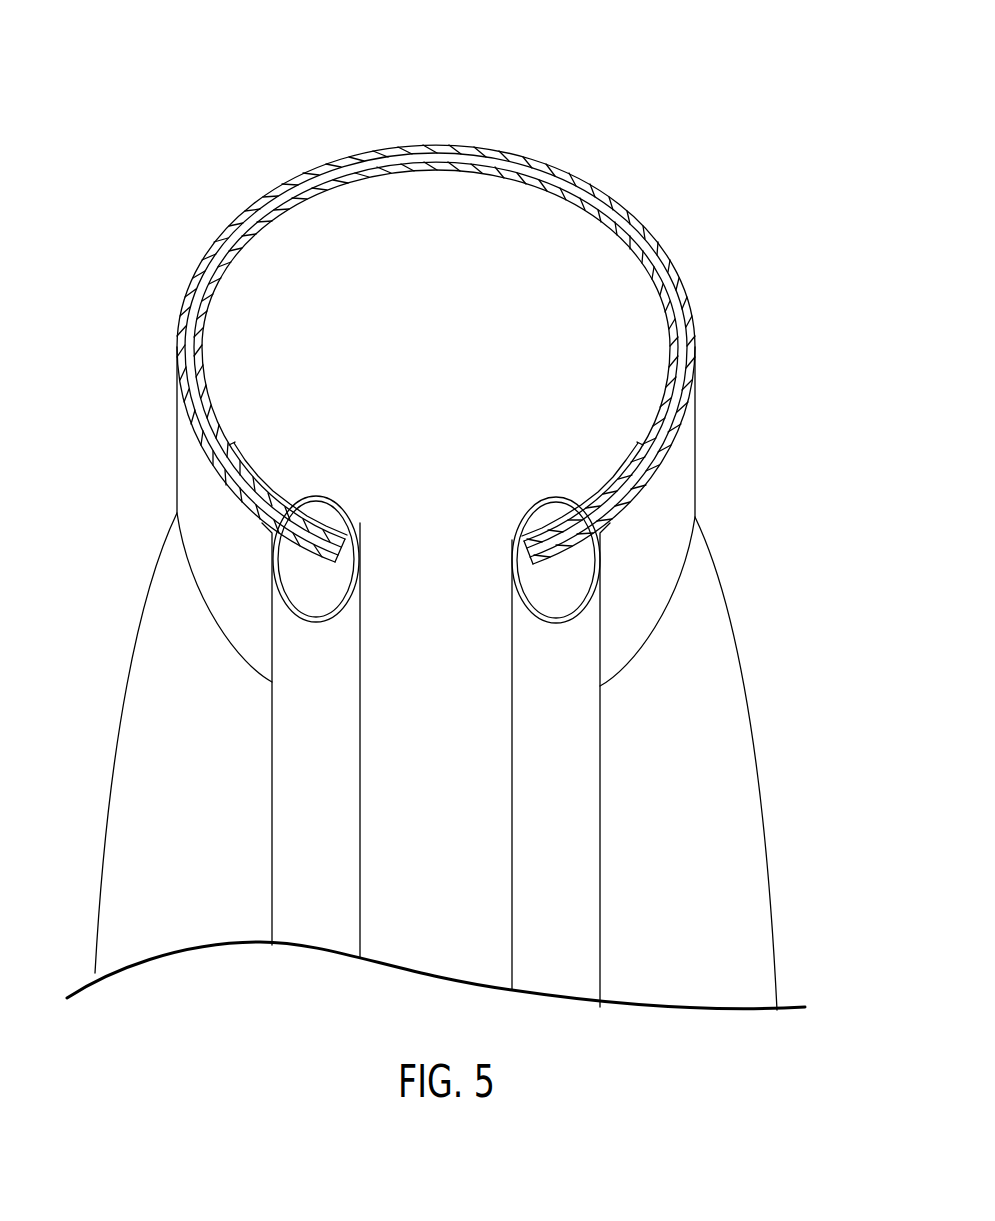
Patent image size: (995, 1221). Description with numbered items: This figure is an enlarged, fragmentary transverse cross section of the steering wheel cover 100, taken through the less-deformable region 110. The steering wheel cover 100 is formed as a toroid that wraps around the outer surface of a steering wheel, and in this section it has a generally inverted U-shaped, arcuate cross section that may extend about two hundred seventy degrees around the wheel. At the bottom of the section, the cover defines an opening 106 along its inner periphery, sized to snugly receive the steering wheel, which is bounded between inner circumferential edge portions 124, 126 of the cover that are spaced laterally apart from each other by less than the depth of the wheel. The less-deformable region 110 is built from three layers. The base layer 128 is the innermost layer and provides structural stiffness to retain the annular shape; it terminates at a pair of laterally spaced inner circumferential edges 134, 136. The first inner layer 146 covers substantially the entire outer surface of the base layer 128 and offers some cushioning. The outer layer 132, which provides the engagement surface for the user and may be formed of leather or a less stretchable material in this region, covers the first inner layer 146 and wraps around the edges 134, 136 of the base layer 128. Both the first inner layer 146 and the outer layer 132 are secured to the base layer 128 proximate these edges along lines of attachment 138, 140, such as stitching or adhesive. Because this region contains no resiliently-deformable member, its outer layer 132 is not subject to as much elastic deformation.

The steering wheel cover 100 is at (745, 149).
The less-deformable region 110 is at (341, 112).
The outer layer 132 is at (470, 147).
The base layer 128 is at (425, 168).
The first inner layer 146 is at (532, 177).
The line of attachment 138 is at (247, 473).
The line of attachment 140 is at (617, 490).
The inner circumferential edge 134 is at (350, 527).
The inner circumferential edge 136 is at (532, 537).
The inner circumferential edge portion 124 is at (293, 807).
The inner circumferential edge portion 126 is at (590, 810).
The opening 106 is at (385, 866).